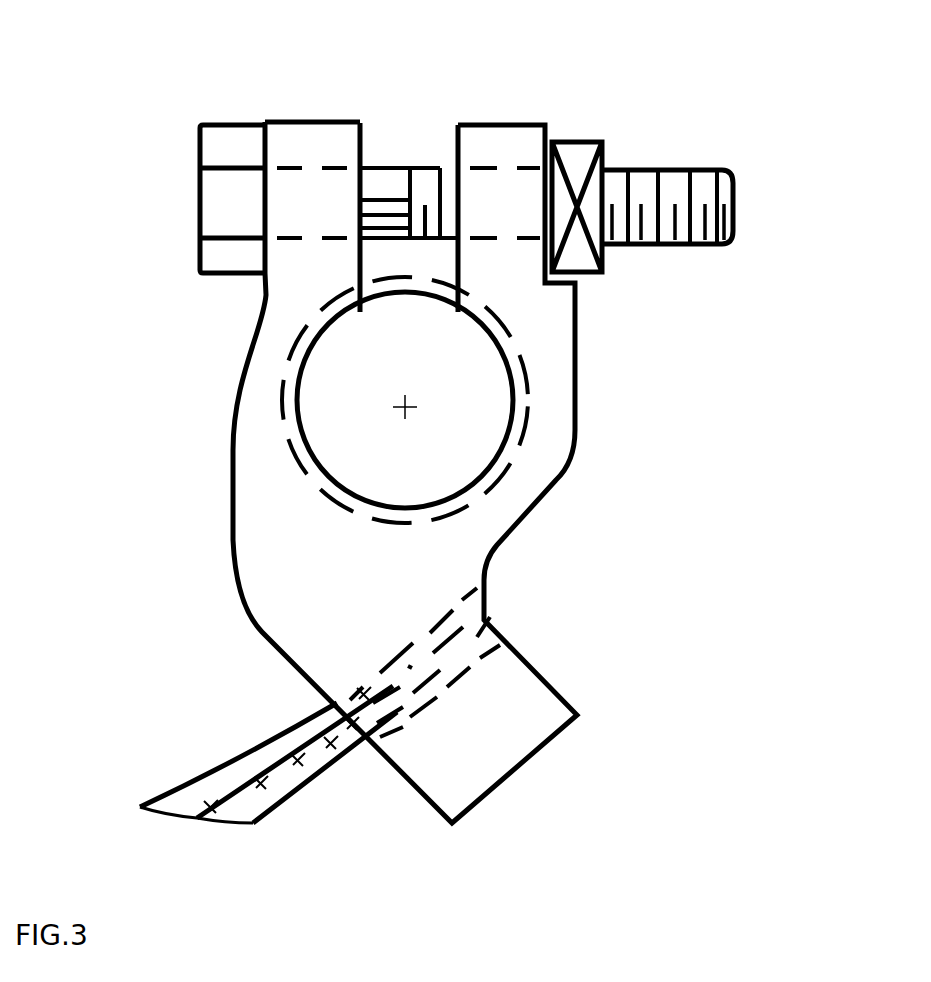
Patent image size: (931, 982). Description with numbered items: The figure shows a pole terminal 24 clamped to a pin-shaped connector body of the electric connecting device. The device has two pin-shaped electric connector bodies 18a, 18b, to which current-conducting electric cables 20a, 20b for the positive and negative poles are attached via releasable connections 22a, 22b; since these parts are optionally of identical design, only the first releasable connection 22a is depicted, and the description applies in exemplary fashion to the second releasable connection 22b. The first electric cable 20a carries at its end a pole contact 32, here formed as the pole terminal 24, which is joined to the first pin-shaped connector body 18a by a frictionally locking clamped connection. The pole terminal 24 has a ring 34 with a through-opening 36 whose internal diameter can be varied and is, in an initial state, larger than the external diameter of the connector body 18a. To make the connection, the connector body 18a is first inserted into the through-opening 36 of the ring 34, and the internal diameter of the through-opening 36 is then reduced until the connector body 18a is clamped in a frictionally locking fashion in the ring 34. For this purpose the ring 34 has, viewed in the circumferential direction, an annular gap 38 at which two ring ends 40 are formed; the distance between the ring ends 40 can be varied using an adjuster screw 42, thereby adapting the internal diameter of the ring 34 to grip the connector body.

The first pin-shaped electric connector body 18a is at (325, 400).
The second pin-shaped electric connector body 18b is at (343, 390).
The first electric cable 20a is at (268, 781).
The second electric cable 20b is at (186, 797).
The first releasable connection 22a is at (704, 143).
The second releasable connection 22b is at (704, 99).
The pole terminal 24 is at (476, 102).
The pole contact 32 is at (267, 605).
The ring 34 is at (557, 395).
The through-opening 36 is at (343, 447).
The annular gap 38 is at (383, 112).
The ring ends 40 is at (298, 140).
The adjuster screw 42 is at (700, 193).